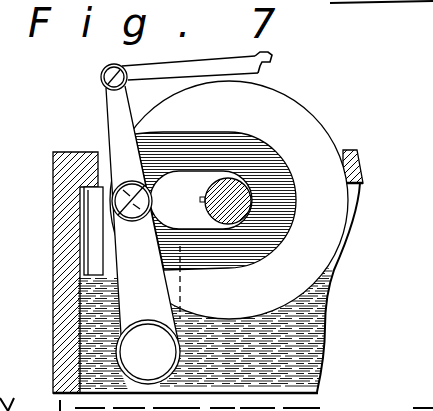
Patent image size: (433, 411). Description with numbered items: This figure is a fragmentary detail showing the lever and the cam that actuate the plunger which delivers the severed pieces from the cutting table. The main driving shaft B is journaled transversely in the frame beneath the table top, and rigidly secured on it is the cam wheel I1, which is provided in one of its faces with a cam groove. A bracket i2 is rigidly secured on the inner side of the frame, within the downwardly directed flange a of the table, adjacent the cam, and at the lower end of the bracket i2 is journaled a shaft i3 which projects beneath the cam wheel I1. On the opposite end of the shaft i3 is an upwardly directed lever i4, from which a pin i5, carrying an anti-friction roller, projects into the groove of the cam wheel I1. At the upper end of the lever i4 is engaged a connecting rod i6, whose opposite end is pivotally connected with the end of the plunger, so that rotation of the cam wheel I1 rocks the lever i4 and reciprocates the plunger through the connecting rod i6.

The flange a is at (328, 331).
The cam wheel I1 is at (320, 155).
The main driving shaft B is at (243, 186).
The lever i4 is at (118, 117).
The connecting rod i6 is at (253, 56).
The pin i5 is at (122, 194).
The bracket i2 is at (112, 266).
The shaft i3 is at (135, 348).